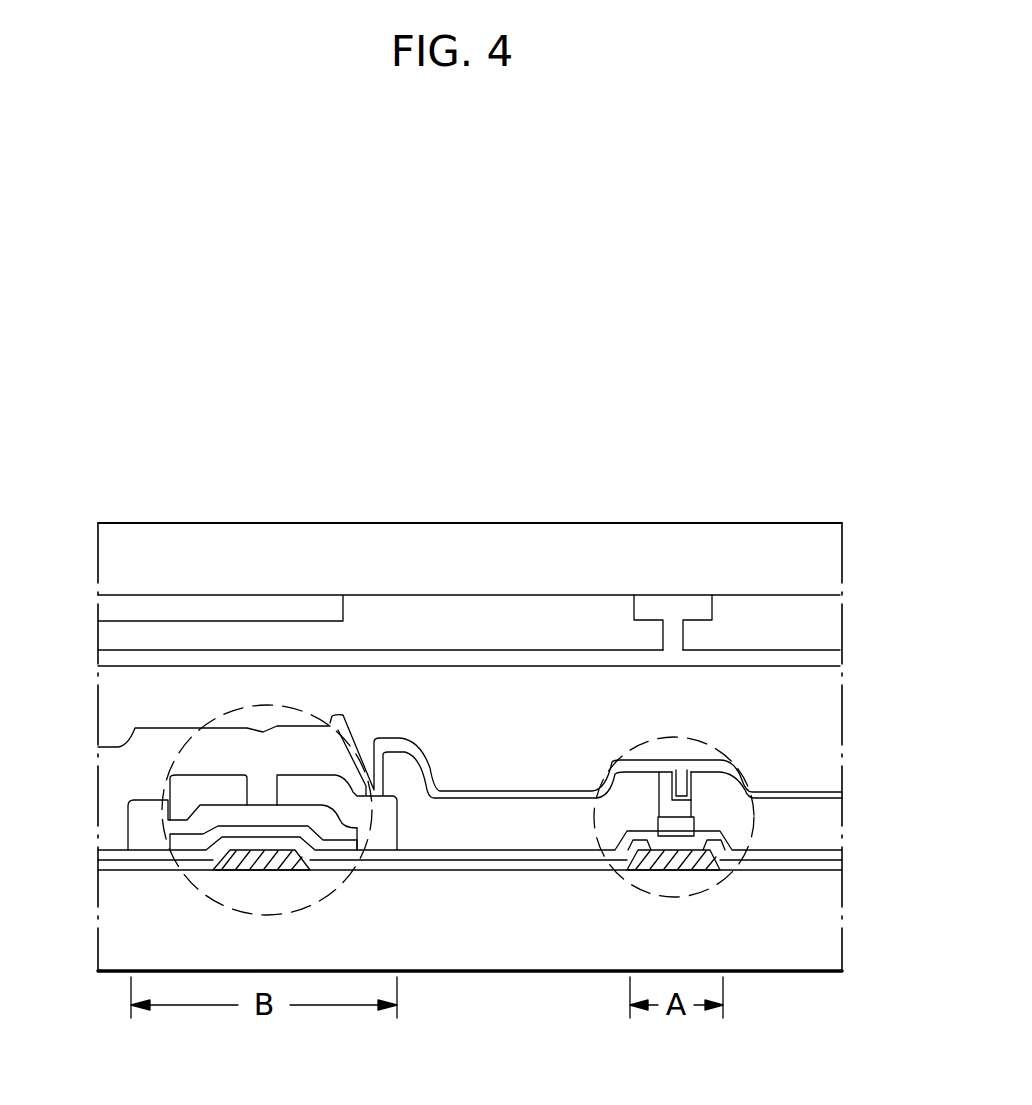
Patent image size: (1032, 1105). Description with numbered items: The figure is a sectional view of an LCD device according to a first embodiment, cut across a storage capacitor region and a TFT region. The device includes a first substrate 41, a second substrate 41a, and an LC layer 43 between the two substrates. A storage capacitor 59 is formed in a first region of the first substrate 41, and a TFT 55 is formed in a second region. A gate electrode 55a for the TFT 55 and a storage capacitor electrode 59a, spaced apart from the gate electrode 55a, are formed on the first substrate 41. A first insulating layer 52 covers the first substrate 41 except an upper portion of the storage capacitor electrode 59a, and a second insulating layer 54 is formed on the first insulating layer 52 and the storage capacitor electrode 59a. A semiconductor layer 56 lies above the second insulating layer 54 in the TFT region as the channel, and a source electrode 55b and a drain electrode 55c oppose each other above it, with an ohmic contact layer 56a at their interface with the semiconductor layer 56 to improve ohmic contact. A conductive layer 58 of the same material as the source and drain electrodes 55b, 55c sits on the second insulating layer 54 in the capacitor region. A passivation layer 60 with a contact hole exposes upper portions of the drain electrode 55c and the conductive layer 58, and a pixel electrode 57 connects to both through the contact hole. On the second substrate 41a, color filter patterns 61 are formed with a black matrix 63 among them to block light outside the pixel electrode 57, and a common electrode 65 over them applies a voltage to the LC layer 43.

The second substrate 41a is at (825, 546).
The black matrix 63 is at (690, 601).
The color filter patterns 61 is at (825, 625).
The common electrode 65 is at (825, 656).
The LC layer 43 is at (825, 696).
The pixel electrode 57 is at (667, 739).
The passivation layer 60 is at (817, 805).
The conductive layer 58 is at (678, 826).
The second insulating layer 54 is at (830, 850).
The first insulating layer 52 is at (832, 868).
The first substrate 41 is at (825, 918).
The drain electrode 55c is at (310, 781).
The ohmic contact layer 56a is at (182, 814).
The source electrode 55b is at (173, 826).
The semiconductor layer 56 is at (127, 835).
The gate electrode 55a is at (200, 892).
The TFT 55 is at (197, 896).
The storage capacitor electrode 59a is at (664, 863).
The storage capacitor 59 is at (718, 874).